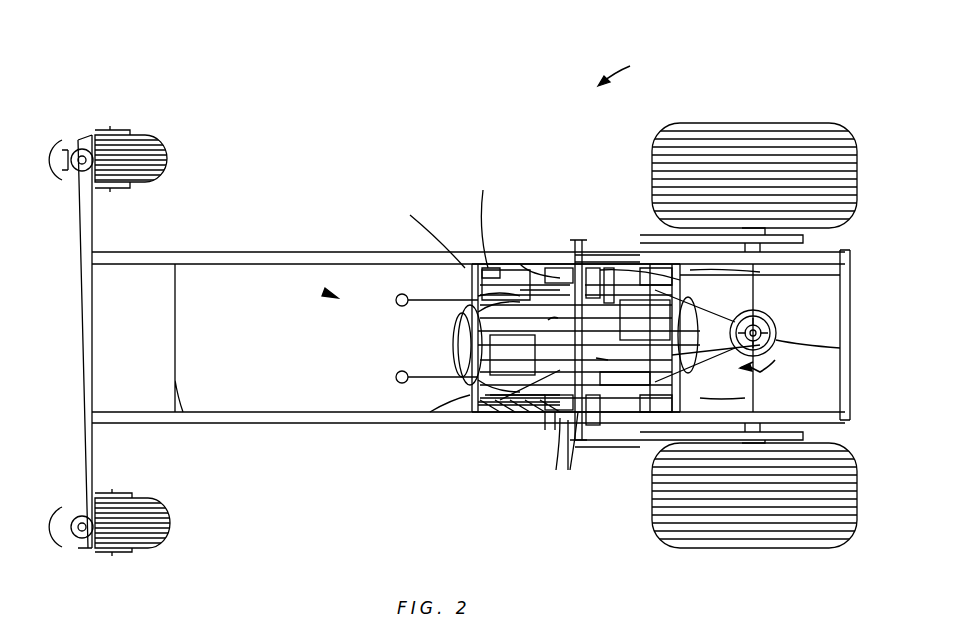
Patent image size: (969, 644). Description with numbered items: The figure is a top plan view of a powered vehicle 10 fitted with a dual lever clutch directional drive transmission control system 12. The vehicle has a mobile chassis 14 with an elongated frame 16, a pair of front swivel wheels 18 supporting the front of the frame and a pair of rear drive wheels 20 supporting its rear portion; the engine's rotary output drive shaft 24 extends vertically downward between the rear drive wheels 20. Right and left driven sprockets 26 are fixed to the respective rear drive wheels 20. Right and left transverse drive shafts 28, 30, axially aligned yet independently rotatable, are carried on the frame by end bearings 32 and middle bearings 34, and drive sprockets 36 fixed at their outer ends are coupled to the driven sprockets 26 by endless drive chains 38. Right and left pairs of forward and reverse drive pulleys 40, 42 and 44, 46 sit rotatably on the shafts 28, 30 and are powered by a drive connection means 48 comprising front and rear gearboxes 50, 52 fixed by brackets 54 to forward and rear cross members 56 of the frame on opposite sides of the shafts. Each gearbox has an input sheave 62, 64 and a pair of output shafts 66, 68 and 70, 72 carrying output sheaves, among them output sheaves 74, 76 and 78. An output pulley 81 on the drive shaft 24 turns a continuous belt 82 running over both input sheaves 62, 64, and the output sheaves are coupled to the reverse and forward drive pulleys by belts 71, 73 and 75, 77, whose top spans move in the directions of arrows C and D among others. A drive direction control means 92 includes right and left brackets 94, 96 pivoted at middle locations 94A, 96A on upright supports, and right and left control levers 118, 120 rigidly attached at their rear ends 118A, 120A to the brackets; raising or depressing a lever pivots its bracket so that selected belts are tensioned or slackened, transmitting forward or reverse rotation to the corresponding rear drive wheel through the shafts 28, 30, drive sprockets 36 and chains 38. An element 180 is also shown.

The powered vehicle 10 is at (620, 70).
The drive transmission control system 12 is at (490, 264).
The mobile chassis 14 is at (293, 250).
The elongated frame 16 is at (170, 338).
The front swivel wheels 18 is at (130, 142).
The rear drive wheels 20 is at (805, 123).
The rotary output drive shaft 24 is at (776, 333).
The driven sprockets 26 is at (800, 238).
The right transverse drive shaft 28 is at (572, 264).
The left transverse drive shaft 30 is at (556, 472).
The end bearings 32 is at (609, 268).
The middle bearings 34 is at (608, 496).
The drive sprockets 36 is at (592, 268).
The endless drive chains 38 is at (652, 268).
The right forward drive pulley 40 is at (604, 255).
The right reverse drive pulley 42 is at (575, 268).
The left forward drive pulley 44 is at (550, 412).
The left reverse drive pulley 46 is at (548, 432).
The drive connection means 48 is at (770, 388).
The front gearbox 50 is at (688, 318).
The rear gearbox 52 is at (478, 345).
The brackets 54 is at (458, 345).
The cross members 56 is at (478, 283).
The input sheave 62 is at (400, 372).
The input sheave 64 is at (700, 272).
The output shaft 66 is at (478, 322).
The output shaft 68 is at (500, 412).
The output shaft 70 is at (695, 275).
The belt 71 is at (530, 296).
The output shaft 72 is at (695, 360).
The belt 73 is at (607, 450).
The output sheave 74 is at (490, 268).
The belt 75 is at (540, 262).
The output sheave 76 is at (490, 405).
The belt 77 is at (625, 378).
The output sheave 78 is at (768, 338).
The output pulley 81 is at (840, 350).
The continuous belt 82 is at (850, 292).
The drive direction control means 92 is at (325, 295).
The right bracket 94 is at (515, 220).
The middle location 94A is at (520, 264).
The left bracket 96 is at (500, 410).
The middle location 96A is at (572, 472).
The right control lever 118 is at (410, 215).
The rear end 118A is at (482, 212).
The left control lever 120 is at (430, 412).
The rear end 120A is at (478, 394).
The support 180 is at (656, 357).
The arrow C is at (556, 326).
The arrow D is at (596, 356).